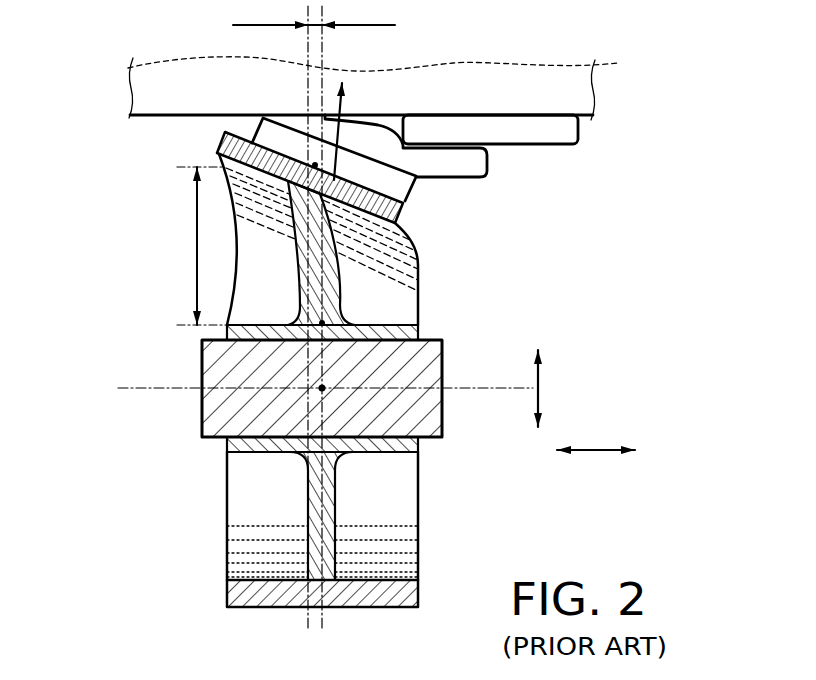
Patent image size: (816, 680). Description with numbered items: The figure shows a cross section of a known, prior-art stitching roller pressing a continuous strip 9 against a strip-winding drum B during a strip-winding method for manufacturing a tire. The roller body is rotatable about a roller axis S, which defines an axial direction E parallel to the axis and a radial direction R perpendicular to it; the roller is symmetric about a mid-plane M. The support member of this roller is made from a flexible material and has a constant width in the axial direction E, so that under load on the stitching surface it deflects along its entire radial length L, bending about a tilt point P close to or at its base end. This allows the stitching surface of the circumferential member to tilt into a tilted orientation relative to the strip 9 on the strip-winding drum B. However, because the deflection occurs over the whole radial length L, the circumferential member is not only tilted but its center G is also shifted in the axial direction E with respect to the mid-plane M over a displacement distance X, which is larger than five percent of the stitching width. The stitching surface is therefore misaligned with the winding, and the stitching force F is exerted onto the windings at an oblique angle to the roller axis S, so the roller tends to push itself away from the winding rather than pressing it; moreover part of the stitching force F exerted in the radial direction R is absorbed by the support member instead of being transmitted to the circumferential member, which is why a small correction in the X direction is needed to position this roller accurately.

The displacement distance X is at (314, 14).
The strip-winding drum B is at (489, 78).
The center of the circumferential member G is at (312, 166).
The stitching force F is at (353, 127).
The continuous strip 9 is at (397, 188).
The radial length L is at (190, 246).
The tilt point P is at (322, 323).
The roller axis S is at (311, 391).
The radial direction R is at (552, 383).
The axial direction E is at (596, 470).
The mid-plane M is at (321, 334).